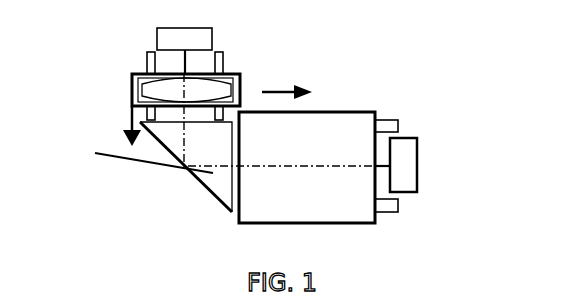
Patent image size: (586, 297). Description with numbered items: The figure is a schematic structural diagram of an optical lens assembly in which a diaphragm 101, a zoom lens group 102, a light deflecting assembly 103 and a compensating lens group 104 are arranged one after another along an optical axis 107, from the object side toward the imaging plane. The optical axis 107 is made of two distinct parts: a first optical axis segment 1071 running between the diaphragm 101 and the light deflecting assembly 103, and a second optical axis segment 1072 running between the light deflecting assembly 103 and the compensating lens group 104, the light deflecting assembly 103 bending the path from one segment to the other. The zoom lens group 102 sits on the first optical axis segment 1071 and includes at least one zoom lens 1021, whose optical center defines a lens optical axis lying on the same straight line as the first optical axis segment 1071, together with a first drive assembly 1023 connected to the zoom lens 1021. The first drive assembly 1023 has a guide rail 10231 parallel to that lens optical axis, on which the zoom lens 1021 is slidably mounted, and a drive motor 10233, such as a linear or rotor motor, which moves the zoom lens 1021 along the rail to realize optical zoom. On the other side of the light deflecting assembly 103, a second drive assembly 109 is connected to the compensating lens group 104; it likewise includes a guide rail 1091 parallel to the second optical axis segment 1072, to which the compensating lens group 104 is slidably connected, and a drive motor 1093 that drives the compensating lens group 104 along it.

The diaphragm 101 is at (143, 76).
The zoom lens 1021 is at (143, 98).
The zoom lens group 102 is at (214, 61).
The first drive assembly 1023 is at (269, 37).
The drive motor 10233 is at (212, 28).
The guide rail 10231 is at (223, 55).
The light deflecting assembly 103 is at (140, 155).
The compensating lens group 104 is at (335, 140).
The optical axis 107 is at (141, 181).
The first optical axis segment 1071 is at (184, 128).
The second optical axis segment 1072 is at (270, 167).
The second drive assembly 109 is at (458, 154).
The guide rail 1091 is at (400, 123).
The drive motor 1093 is at (405, 152).